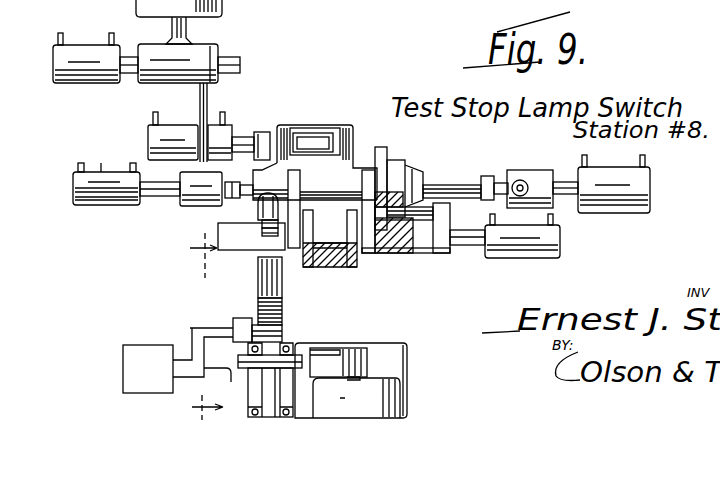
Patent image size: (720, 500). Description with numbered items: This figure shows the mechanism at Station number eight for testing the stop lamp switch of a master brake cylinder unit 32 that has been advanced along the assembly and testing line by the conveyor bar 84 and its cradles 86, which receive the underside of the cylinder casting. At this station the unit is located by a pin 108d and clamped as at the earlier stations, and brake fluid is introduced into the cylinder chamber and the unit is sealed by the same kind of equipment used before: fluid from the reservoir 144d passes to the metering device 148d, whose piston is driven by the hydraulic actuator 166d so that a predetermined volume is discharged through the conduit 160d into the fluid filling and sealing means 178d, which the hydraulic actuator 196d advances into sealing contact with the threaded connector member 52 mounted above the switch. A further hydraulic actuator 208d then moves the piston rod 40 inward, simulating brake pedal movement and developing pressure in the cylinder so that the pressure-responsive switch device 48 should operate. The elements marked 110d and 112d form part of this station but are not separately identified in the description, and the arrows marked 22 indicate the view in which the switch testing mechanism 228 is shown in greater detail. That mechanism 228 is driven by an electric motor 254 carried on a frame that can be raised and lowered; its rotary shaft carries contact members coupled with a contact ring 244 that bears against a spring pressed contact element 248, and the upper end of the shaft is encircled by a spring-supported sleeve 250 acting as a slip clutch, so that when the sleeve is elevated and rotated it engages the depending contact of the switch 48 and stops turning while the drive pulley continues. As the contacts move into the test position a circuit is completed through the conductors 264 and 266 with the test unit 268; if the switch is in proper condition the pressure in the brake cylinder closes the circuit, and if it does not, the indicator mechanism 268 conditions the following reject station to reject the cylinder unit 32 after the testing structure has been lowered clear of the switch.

The master brake cylinder unit 32 is at (336, 118).
The piston rod 40 is at (455, 184).
The conveyor reference 22 is at (190, 327).
The pressure-responsive switch device 48 is at (260, 242).
The threaded connector member 52 is at (240, 210).
The longitudinally extending bar 84 is at (330, 275).
The cradle 86 is at (297, 270).
The locating pin 108d is at (425, 232).
The air cylinder 110d is at (525, 262).
The valve 112d is at (218, 130).
The reservoir 144d is at (232, 12).
The metering device 148d is at (198, 47).
The conduit 160d is at (210, 98).
The hydraulic actuator 166d is at (95, 96).
The fluid filling and sealing means 178d is at (170, 215).
The hydraulic actuator 196d is at (150, 107).
The hydraulic actuator 208d is at (638, 189).
The switch testing mechanism 228 is at (225, 309).
The contact ring 244 is at (284, 330).
The spring pressed contact element 248 is at (286, 338).
The sleeve 250 is at (260, 288).
The electric motor 254 is at (400, 378).
The conductor 264 is at (207, 368).
The conductor 266 is at (190, 327).
The test unit 268 is at (133, 373).